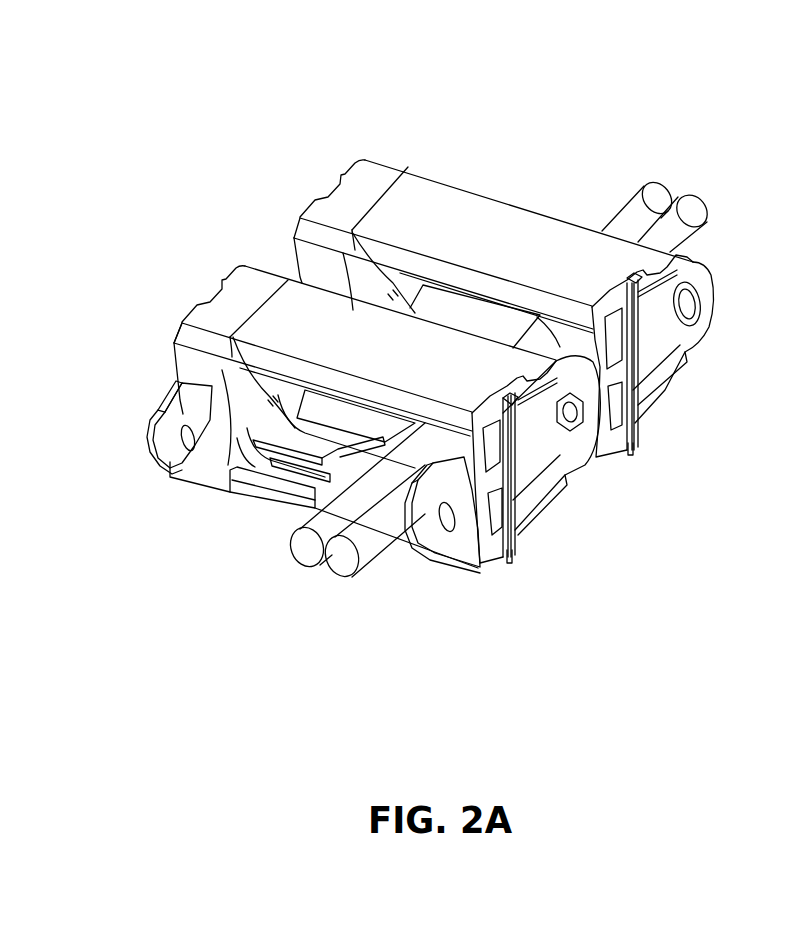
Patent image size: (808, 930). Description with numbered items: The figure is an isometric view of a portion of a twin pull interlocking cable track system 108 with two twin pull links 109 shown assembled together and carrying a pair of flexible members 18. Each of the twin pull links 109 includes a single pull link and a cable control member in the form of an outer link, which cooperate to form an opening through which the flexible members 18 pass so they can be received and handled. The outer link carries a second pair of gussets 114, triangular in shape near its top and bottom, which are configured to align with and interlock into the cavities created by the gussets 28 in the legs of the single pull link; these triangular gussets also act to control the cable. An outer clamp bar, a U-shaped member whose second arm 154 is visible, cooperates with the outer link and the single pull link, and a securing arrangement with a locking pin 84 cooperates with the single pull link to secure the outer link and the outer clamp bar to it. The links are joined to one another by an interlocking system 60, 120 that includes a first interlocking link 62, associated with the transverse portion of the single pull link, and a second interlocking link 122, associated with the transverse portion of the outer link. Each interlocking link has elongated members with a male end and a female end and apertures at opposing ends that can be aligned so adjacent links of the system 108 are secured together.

The twin pull interlocking cable track system 108 is at (207, 92).
The interlocking system 120 is at (229, 257).
The twin pull links 109 is at (379, 358).
The second pair of gussets 114 is at (352, 230).
The second arm 154 is at (291, 457).
The gussets 28 is at (298, 488).
The second interlocking link 122 is at (180, 396).
The first interlocking link 62 is at (458, 520).
The flexible member 18 is at (307, 550).
The locking pin 84 is at (514, 473).
The interlocking system 60 is at (629, 460).